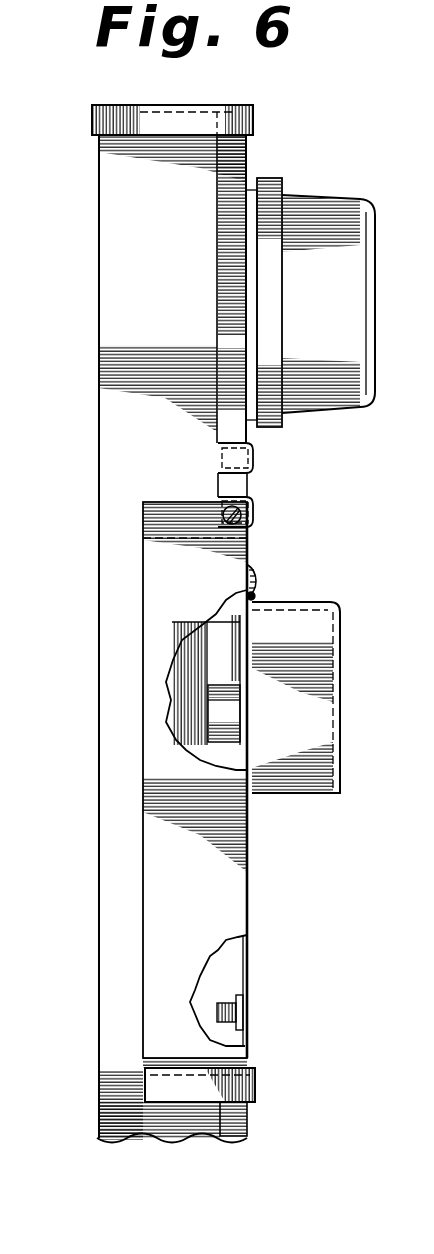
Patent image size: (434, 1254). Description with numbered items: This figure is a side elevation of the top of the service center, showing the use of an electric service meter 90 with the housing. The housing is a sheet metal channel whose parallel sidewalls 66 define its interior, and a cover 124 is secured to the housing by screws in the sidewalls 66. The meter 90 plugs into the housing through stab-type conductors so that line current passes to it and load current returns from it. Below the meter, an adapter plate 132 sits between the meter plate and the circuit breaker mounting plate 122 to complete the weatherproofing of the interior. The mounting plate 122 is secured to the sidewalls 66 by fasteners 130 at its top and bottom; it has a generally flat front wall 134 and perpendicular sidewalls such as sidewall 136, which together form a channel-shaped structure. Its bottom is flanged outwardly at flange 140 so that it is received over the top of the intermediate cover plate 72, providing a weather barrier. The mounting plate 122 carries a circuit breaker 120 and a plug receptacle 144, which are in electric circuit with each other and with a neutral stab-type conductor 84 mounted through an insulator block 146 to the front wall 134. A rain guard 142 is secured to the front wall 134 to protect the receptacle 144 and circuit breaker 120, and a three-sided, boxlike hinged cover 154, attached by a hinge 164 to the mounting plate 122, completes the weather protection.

The sidewalls 66 is at (118, 459).
The cover 124 is at (180, 122).
The meter 90 is at (317, 230).
The adapter plate 132 is at (247, 485).
The fasteners 130 is at (248, 512).
The hinge 164 is at (257, 597).
The circuit breaker 120 is at (225, 633).
The hinged cover 154 is at (340, 646).
The rain guard 142 is at (352, 704).
The plug receptacle 144 is at (233, 705).
The front wall 134 is at (249, 850).
The mounting plate 122 is at (210, 913).
The sidewall 136 is at (243, 925).
The neutral stab-type conductor 84 is at (238, 998).
The insulator block 146 is at (243, 1020).
The outward flange 140 is at (256, 1082).
The intermediate cover plate 72 is at (238, 1130).